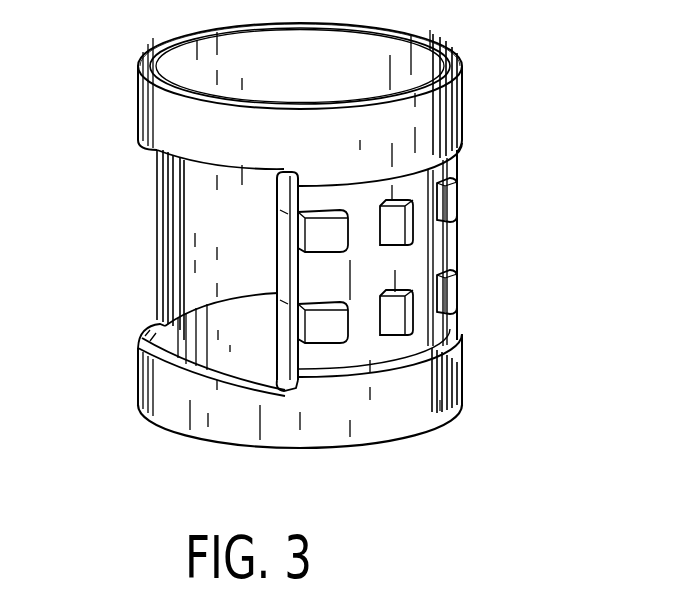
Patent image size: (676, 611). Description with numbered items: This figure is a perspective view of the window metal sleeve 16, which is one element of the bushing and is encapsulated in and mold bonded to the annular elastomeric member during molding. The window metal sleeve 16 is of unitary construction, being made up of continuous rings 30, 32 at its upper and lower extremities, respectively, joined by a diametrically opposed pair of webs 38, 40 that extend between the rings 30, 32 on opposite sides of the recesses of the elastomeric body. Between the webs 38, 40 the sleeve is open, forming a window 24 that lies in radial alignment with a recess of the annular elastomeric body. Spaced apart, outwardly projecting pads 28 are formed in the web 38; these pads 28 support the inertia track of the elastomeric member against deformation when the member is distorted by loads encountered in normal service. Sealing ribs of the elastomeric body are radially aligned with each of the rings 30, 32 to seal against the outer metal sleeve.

The window metal sleeve 16 is at (139, 108).
The window 24 is at (202, 250).
The pads 28 is at (403, 227).
The ring 30 is at (420, 125).
The ring 32 is at (463, 382).
The web 38 is at (442, 418).
The web 40 is at (156, 203).